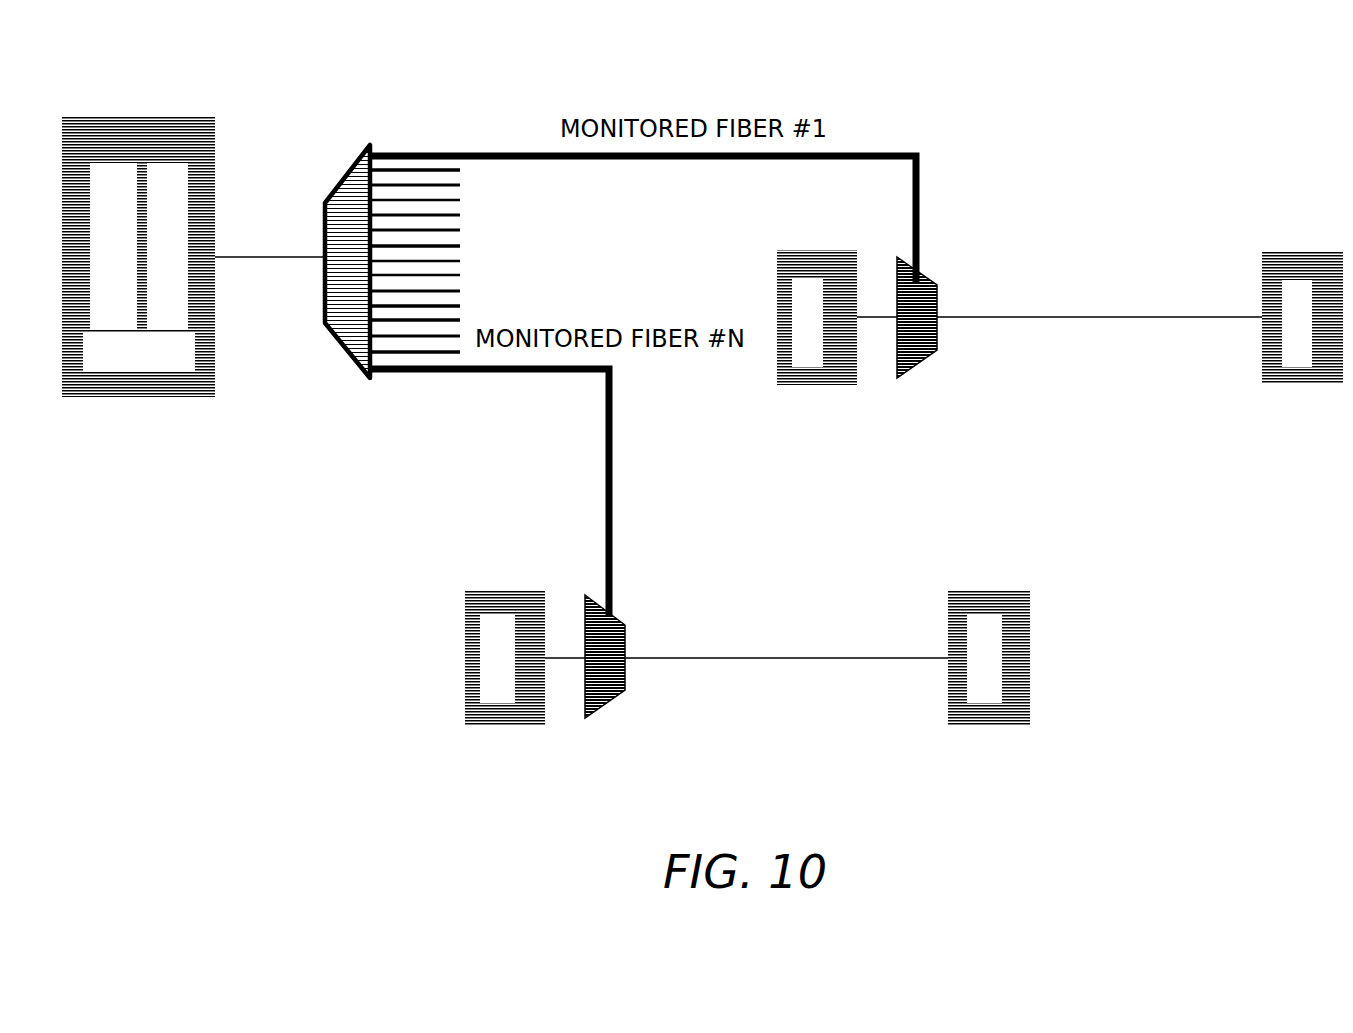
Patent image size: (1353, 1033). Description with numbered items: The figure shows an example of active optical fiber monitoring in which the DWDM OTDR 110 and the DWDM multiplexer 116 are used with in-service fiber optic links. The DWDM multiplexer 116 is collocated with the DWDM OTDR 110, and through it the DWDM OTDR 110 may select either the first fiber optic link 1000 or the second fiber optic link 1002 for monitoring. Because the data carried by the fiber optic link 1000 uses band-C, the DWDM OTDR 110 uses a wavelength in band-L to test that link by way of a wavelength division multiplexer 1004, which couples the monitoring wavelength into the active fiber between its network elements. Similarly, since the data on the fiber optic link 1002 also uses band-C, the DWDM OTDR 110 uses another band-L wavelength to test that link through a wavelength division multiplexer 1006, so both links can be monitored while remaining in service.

The DWDM OTDR 110 is at (114, 107).
The DWDM multiplexer 116 is at (348, 155).
The fiber optic link 1000 is at (1073, 248).
The fiber optic link 1002 is at (773, 593).
The wavelength division multiplexer 1004 is at (939, 274).
The wavelength division multiplexer 1006 is at (624, 608).